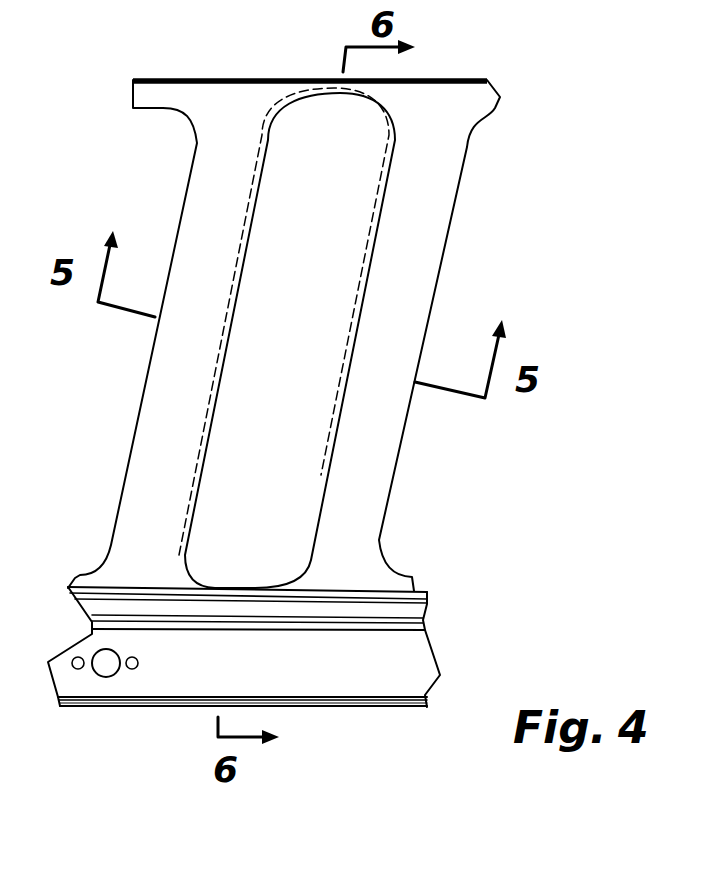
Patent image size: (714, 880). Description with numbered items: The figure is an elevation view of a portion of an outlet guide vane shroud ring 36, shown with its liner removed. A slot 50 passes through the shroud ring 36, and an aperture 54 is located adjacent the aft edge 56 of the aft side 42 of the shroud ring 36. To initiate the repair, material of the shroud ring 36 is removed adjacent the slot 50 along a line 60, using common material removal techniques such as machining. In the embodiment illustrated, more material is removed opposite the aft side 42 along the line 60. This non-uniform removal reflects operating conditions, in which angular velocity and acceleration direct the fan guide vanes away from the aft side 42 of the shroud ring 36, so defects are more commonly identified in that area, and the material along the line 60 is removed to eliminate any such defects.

The shroud ring 36 is at (502, 164).
The aft side 42 is at (217, 680).
The slot 50 is at (312, 257).
The aperture 54 is at (106, 668).
The aft edge 56 is at (360, 705).
The line 60 is at (392, 188).